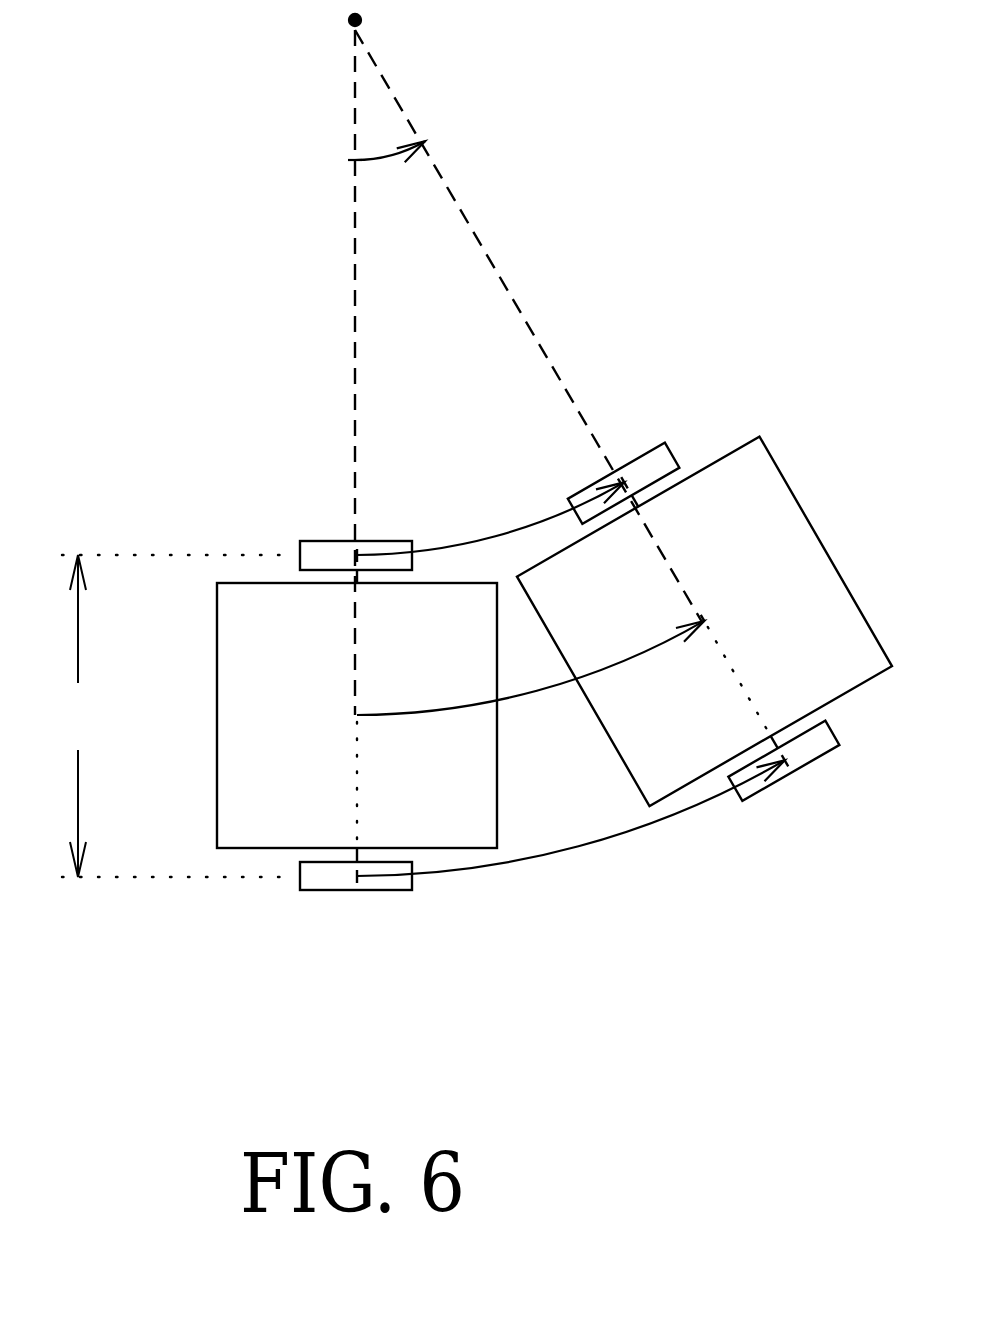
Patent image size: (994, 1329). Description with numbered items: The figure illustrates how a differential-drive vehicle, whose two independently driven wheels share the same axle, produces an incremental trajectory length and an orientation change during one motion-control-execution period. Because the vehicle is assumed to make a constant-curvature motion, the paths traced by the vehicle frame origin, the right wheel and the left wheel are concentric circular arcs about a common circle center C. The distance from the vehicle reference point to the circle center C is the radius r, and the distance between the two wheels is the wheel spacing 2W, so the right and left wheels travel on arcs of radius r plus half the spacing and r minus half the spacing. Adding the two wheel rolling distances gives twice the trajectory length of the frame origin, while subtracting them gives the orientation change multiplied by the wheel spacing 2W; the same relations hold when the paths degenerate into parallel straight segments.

The circle center C is at (326, 22).
The distance from the reference point to the circle center r is at (509, 372).
The distance between the two wheels 2W is at (168, 716).